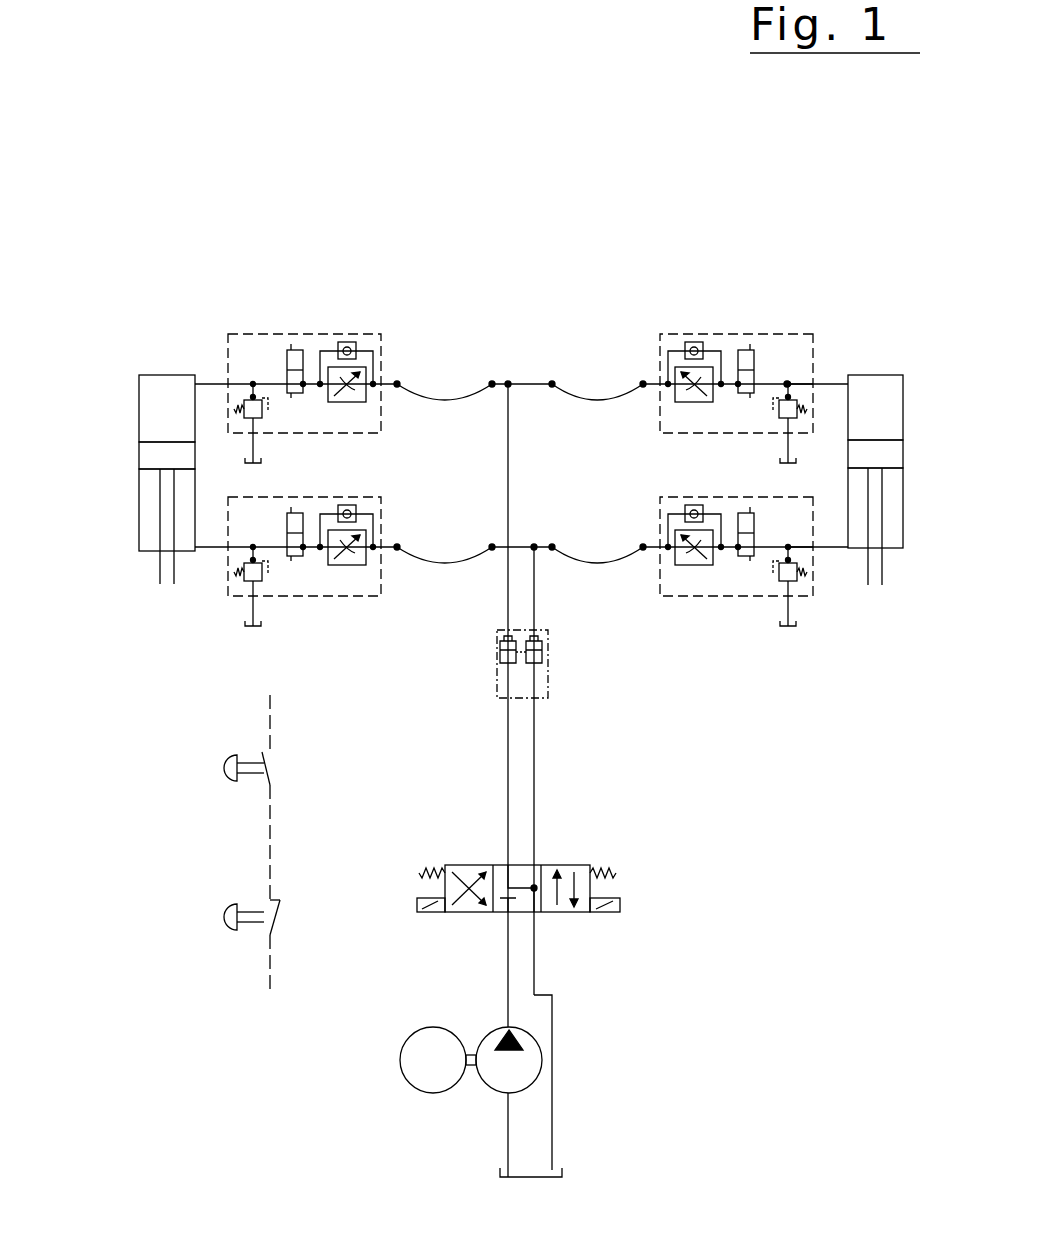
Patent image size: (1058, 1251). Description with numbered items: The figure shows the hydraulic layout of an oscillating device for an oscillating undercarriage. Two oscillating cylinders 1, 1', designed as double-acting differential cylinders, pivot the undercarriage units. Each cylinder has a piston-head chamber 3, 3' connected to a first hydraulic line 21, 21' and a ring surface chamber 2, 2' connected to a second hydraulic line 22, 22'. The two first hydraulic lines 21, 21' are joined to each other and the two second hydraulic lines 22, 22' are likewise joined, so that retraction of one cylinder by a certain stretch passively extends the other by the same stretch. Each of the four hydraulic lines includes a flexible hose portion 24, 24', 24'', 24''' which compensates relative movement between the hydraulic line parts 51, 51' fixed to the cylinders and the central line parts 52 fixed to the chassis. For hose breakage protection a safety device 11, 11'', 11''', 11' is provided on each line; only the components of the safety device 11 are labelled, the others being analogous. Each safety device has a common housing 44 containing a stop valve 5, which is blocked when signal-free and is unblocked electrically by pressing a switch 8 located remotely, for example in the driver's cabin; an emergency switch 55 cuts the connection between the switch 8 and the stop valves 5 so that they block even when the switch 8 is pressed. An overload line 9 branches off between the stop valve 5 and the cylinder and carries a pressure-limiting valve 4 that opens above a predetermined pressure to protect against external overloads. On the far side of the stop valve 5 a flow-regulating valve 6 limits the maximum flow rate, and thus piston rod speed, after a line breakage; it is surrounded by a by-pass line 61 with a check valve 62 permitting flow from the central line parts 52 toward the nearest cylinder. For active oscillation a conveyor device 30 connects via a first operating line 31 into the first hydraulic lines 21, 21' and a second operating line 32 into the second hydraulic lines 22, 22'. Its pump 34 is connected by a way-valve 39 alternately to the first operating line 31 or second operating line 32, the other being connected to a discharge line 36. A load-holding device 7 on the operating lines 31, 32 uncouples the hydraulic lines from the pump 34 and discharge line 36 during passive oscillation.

The oscillating cylinder 1 is at (904, 474).
The oscillating cylinder 1' is at (126, 474).
The ring surface chamber 2 is at (901, 526).
The ring surface chamber 2' is at (133, 526).
The piston-head chamber 3 is at (901, 402).
The piston-head chamber 3' is at (132, 403).
The pressure-limiting valve 4 is at (806, 428).
The stop valve 5 is at (776, 323).
The flow-regulating valve 6 is at (662, 415).
The load-holding device 7 is at (541, 688).
The switch 8 is at (222, 765).
The overload line 9 is at (790, 382).
The safety device 11 is at (704, 363).
The safety device 11' is at (736, 585).
The safety device 11'' is at (356, 368).
The safety device 11''' is at (318, 585).
The first hydraulic line 21 is at (851, 335).
The first hydraulic line 21' is at (198, 335).
The second hydraulic line 22 is at (849, 604).
The second hydraulic line 22' is at (199, 594).
The flexible hose portion 24 is at (595, 419).
The flexible hose portion 24' is at (597, 584).
The flexible hose portion 24'' is at (444, 419).
The flexible hose portion 24''' is at (444, 584).
The conveyor device 30 is at (738, 928).
The first operating line 31 is at (506, 745).
The second operating line 32 is at (537, 762).
The pump 34 is at (498, 1078).
The discharge line 36 is at (553, 1038).
The way-valve 39 is at (572, 905).
The common housing 44 is at (736, 406).
The hydraulic line part 51 is at (728, 241).
The hydraulic line part 51' is at (312, 241).
The line part 52 is at (530, 192).
The emergency switch 55 is at (222, 915).
The by-pass line 61 is at (679, 321).
The check valve 62 is at (722, 307).